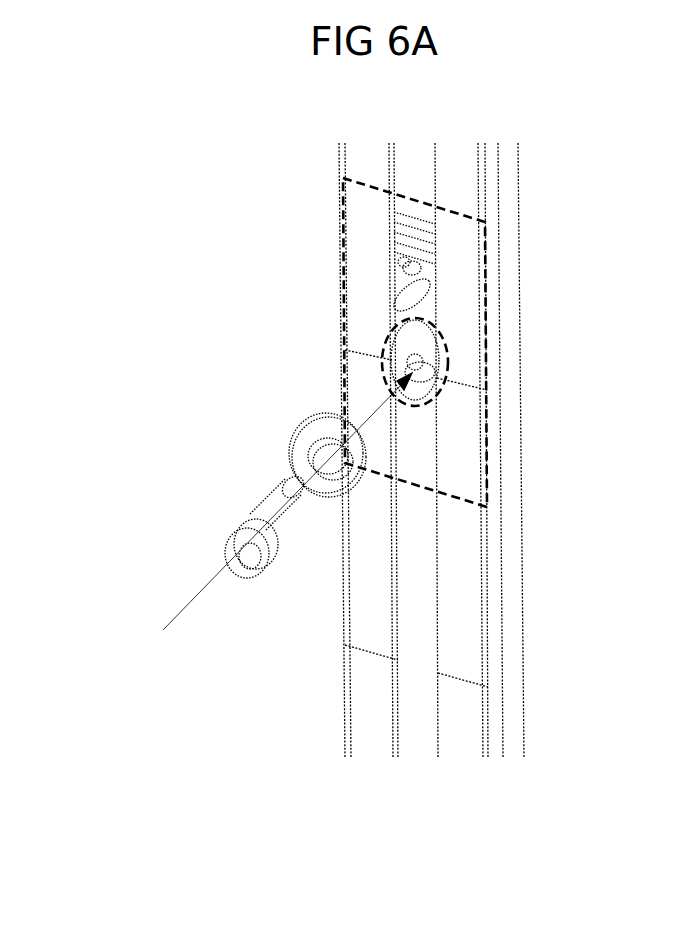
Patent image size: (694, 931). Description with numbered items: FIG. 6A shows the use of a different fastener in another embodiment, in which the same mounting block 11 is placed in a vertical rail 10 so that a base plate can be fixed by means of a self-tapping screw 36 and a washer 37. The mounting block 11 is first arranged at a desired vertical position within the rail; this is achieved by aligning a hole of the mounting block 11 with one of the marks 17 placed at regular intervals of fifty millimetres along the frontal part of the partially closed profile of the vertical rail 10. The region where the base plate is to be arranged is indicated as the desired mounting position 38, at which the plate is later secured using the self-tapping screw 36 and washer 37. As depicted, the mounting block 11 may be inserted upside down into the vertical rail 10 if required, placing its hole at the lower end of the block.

The vertical rail 10 is at (513, 693).
The mounting block 11 is at (423, 243).
The mark 17 is at (450, 383).
The self-tapping screw 36 is at (227, 530).
The washer 37 is at (300, 435).
The desired mounting position 38 is at (343, 278).